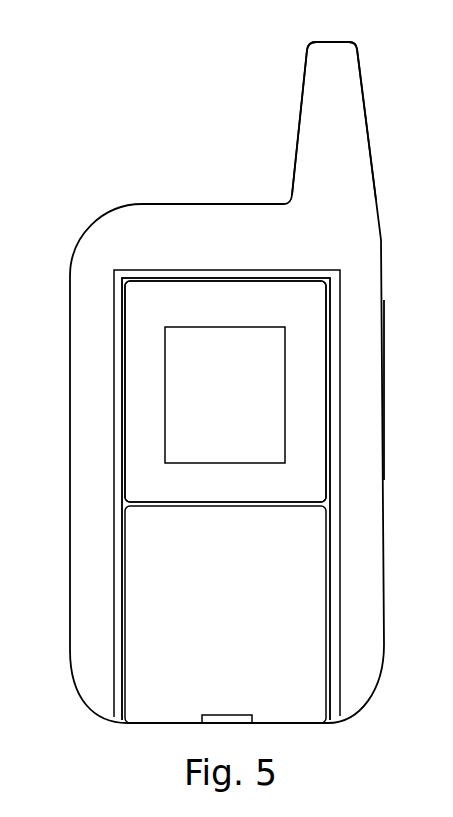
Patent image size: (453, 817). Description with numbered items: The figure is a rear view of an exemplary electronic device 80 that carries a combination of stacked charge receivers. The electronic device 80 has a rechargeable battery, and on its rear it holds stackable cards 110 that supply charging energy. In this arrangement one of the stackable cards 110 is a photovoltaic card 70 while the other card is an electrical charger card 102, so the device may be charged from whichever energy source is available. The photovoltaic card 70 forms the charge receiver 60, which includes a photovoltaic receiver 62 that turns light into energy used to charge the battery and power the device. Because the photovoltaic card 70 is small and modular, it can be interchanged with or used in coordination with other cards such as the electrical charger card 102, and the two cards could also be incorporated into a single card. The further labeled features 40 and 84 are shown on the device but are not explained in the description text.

The electronic device 40 is at (418, 390).
The mobile communication device 60 is at (157, 404).
The display 62 is at (200, 348).
The protective cover layer 70 is at (272, 325).
The antenna 80 is at (353, 147).
The housing 84 is at (127, 505).
The connector 102 is at (228, 720).
The protective film layer 110 is at (272, 354).